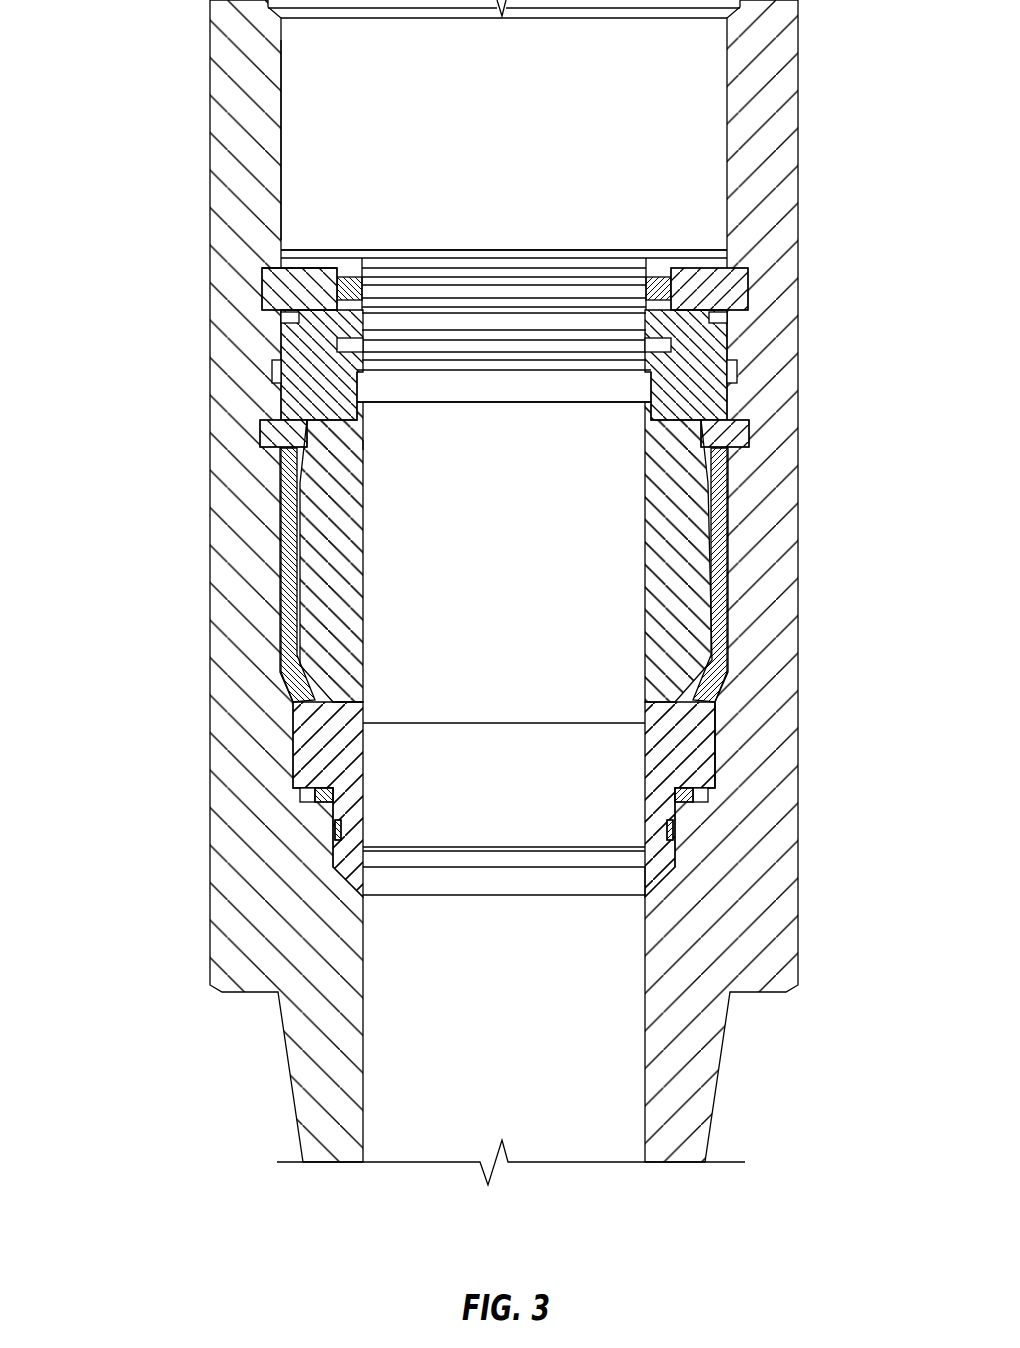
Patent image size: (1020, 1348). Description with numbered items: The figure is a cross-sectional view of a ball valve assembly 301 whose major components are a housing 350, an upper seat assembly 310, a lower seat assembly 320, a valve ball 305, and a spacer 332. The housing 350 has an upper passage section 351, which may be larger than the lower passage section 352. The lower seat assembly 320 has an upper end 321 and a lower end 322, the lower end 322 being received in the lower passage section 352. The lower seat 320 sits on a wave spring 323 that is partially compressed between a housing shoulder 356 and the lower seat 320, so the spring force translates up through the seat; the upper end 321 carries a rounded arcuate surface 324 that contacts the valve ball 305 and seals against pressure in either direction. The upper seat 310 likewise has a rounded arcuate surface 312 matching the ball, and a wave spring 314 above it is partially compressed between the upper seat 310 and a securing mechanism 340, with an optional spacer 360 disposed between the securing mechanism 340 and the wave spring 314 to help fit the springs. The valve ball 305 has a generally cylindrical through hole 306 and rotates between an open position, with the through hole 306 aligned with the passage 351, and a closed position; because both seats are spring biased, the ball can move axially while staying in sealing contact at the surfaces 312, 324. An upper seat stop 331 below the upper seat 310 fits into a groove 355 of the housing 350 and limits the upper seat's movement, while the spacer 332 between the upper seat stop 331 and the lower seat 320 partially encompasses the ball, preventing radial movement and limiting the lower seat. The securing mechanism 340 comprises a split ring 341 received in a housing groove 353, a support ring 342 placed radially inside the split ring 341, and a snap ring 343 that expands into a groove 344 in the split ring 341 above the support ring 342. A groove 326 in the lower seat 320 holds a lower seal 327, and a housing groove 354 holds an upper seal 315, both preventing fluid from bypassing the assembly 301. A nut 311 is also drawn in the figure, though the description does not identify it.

The ball valve assembly 301 is at (160, 813).
The valve ball 305 is at (303, 578).
The through hole 306 is at (530, 600).
The upper seat assembly 310 is at (733, 393).
The retaining nut 311 is at (280, 388).
The rounded arcuate surface 312 is at (364, 445).
The wave spring 314 is at (372, 402).
The upper seal 315 is at (645, 402).
The lower seat assembly 320 is at (717, 733).
The upper end 321 is at (713, 713).
The lower end 322 is at (663, 865).
The wave spring 323 is at (685, 797).
The rounded arcuate surface 324 is at (362, 722).
The groove 326 is at (365, 800).
The lower seal 327 is at (345, 838).
The upper seat stop 331 is at (735, 435).
The spacer 332 is at (722, 627).
The securing mechanism 340 is at (323, 243).
The split ring 341 is at (712, 257).
The support ring 342 is at (655, 262).
The snap ring 343 is at (345, 278).
The groove 344 is at (263, 255).
The housing 350 is at (222, 255).
The upper passage section 351 is at (282, 112).
The lower passage section 352 is at (320, 850).
The groove 353 is at (748, 280).
The groove 354 is at (733, 367).
The groove 355 is at (750, 428).
The housing shoulder 356 is at (303, 800).
The spacer 360 is at (285, 315).